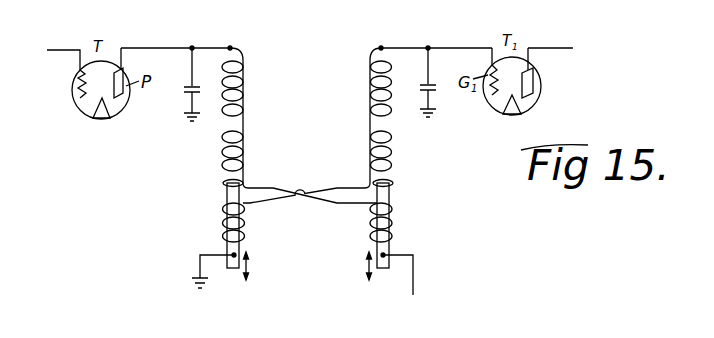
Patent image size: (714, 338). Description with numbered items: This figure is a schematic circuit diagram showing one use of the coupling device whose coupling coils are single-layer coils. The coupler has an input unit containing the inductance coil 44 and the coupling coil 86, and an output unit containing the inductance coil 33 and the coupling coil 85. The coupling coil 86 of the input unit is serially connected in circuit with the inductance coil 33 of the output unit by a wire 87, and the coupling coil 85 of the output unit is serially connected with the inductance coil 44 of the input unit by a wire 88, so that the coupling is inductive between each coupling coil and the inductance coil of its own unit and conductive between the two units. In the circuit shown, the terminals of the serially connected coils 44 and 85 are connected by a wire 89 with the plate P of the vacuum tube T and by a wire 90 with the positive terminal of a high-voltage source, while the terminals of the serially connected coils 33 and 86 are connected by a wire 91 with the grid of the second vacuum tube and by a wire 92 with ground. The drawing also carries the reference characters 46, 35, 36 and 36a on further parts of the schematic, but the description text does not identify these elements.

The wire 89 is at (162, 47).
The wire 91 is at (454, 45).
The condenser 46 is at (188, 89).
The condenser 35 is at (436, 93).
The inductance coil 44 is at (246, 140).
The inductance coil 33 is at (369, 142).
The wire 88 is at (265, 188).
The wire 87 is at (334, 188).
The movable core 36a is at (235, 269).
The movable core 36 is at (382, 269).
The coupling coil 86 is at (245, 229).
The coupling coil 85 is at (371, 218).
The wire 92 is at (204, 250).
The wire 90 is at (415, 273).